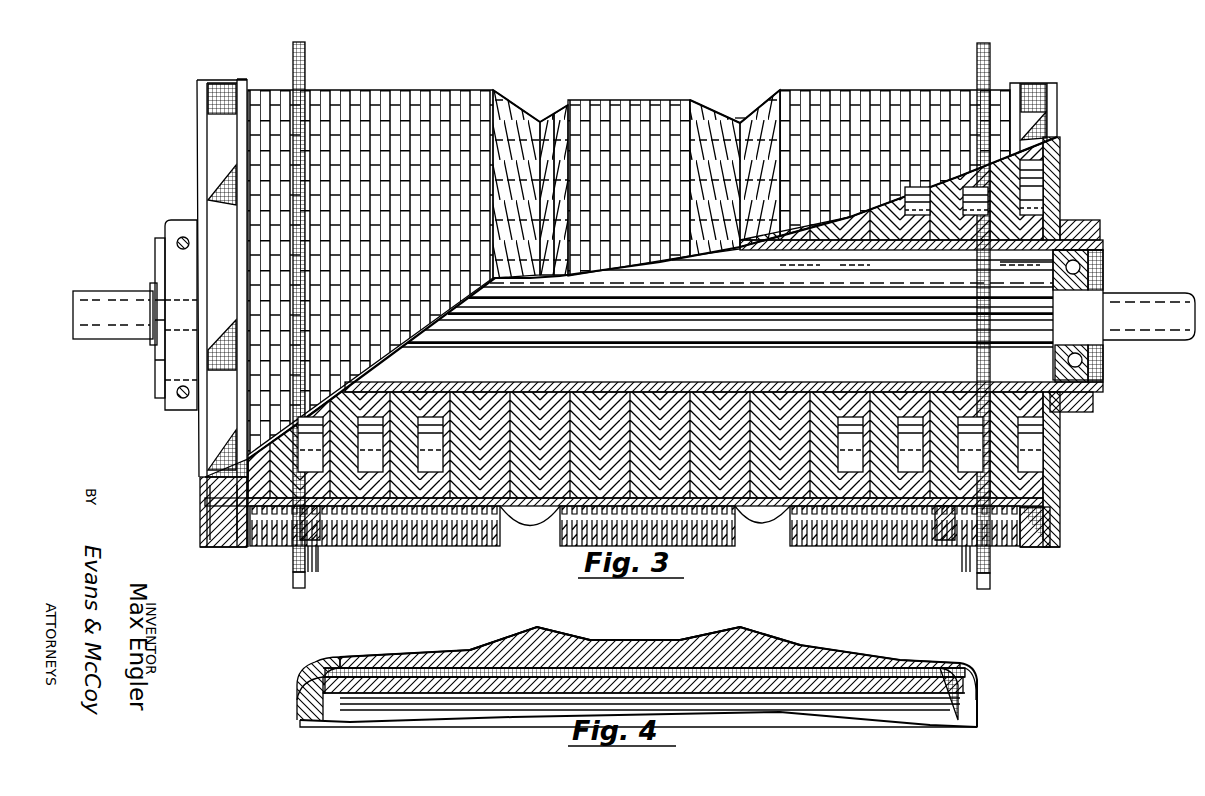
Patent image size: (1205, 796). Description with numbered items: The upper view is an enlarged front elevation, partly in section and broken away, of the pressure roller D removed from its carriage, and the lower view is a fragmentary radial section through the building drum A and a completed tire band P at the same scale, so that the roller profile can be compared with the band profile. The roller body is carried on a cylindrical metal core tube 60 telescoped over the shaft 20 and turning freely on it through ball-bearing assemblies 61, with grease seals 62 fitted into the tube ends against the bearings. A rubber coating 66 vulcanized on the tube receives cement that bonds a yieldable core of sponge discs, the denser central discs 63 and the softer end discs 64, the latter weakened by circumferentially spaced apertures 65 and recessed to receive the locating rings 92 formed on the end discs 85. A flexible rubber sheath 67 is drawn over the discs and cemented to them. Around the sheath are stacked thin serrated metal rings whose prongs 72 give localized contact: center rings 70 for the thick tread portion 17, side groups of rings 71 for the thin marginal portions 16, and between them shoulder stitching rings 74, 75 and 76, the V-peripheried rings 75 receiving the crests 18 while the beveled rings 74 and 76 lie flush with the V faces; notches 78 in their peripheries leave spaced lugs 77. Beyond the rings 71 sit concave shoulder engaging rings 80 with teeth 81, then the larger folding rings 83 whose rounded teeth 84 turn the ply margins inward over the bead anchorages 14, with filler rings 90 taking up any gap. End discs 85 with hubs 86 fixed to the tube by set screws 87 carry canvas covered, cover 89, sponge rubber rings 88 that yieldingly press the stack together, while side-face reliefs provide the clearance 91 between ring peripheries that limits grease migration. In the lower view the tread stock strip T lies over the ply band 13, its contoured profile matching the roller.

In FIG. 4, the ply band 13 is at (598, 640).
In FIG. 4, the bead anchorages 14 is at (298, 700).
In FIG. 4, the marginal portions 16 is at (428, 657).
In FIG. 4, the central portion 17 is at (662, 640).
In FIG. 4, the crests 18 is at (538, 626).
In FIG. 3, the shaft 20 is at (115, 293).
In FIG. 3, the core tube 60 is at (157, 258).
In FIG. 3, the ball-bearing assemblies 61 is at (1055, 265).
In FIG. 3, the grease seals 62 is at (1105, 262).
In FIG. 3, the central sponge discs 63 is at (750, 388).
In FIG. 3, the end sponge discs 64 is at (446, 386).
In FIG. 3, the apertures 65 is at (1038, 178).
In FIG. 3, the rubber coating 66 is at (862, 243).
In FIG. 3, the rubber sheath 67 is at (550, 520).
In FIG. 3, the center rings 70 is at (675, 100).
In FIG. 3, the side wall rings 71 is at (425, 90).
In FIG. 3, the prongs 72 is at (418, 545).
In FIG. 3, the beveled shoulder stitching rings 74 is at (590, 88).
In FIG. 3, the V shoulder stitching rings 75 is at (542, 118).
In FIG. 3, the beveled shoulder stitching rings 76 is at (506, 97).
In FIG. 3, the lugs 77 is at (715, 130).
In FIG. 3, the notches 78 is at (725, 130).
In FIG. 3, the shoulder engaging rings 80 is at (312, 542).
In FIG. 3, the teeth 81 is at (315, 565).
In FIG. 3, the folding rings 83 is at (293, 560).
In FIG. 3, the teeth 84 is at (298, 590).
In FIG. 3, the end discs 85 is at (203, 140).
In FIG. 3, the hubs 86 is at (175, 230).
In FIG. 3, the set screws 87 is at (178, 242).
In FIG. 3, the sponge rubber rings 88 is at (205, 530).
In FIG. 3, the fabric covers 89 is at (230, 550).
In FIG. 3, the filler rings 90 is at (252, 547).
In FIG. 3, the clearance 91 is at (385, 545).
In FIG. 3, the locating rings 92 is at (210, 470).
In FIG. 3, the pressure roller D is at (800, 62).
In FIG. 4, the tread stock strip T is at (496, 639).
In FIG. 4, the tire band P is at (969, 668).
In FIG. 4, the building drum A is at (795, 720).